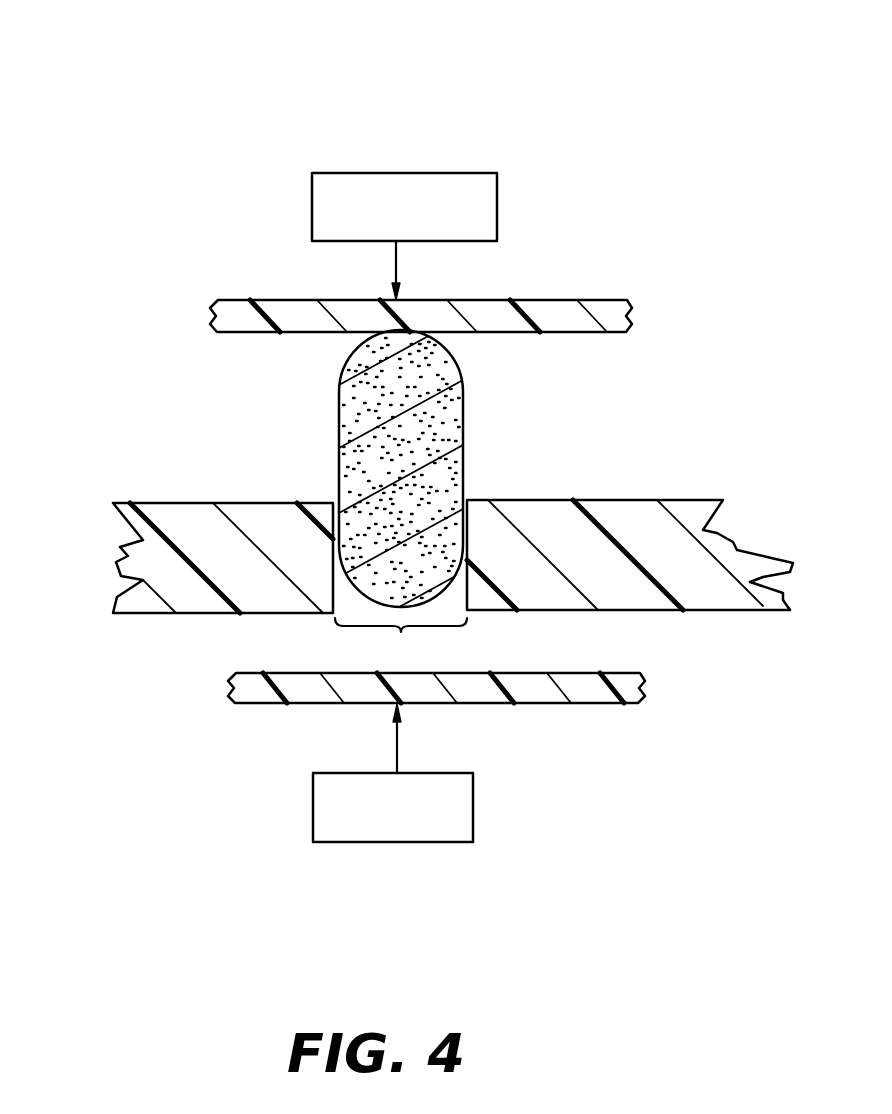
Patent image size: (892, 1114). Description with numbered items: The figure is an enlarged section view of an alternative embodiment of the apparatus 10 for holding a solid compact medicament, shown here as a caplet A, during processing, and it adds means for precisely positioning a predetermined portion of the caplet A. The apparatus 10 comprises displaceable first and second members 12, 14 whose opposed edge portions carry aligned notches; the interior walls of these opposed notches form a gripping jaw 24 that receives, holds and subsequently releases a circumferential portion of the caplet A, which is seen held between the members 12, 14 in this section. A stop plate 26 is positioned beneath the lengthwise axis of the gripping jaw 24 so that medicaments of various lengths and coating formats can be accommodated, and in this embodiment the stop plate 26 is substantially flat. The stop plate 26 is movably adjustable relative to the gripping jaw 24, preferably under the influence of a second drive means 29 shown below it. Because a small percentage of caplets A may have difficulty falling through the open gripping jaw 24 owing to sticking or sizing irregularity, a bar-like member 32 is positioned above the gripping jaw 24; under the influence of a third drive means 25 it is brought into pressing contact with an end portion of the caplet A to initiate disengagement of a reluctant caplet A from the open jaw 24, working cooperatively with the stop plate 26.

The apparatus 10 is at (660, 104).
The first member 12 is at (233, 503).
The second member 14 is at (583, 500).
The gripping jaw 24 is at (401, 641).
The third drive means 25 is at (497, 187).
The stop plate 26 is at (533, 703).
The second drive means 29 is at (430, 842).
The bar-like member 32 is at (543, 300).
The caplet A is at (463, 415).